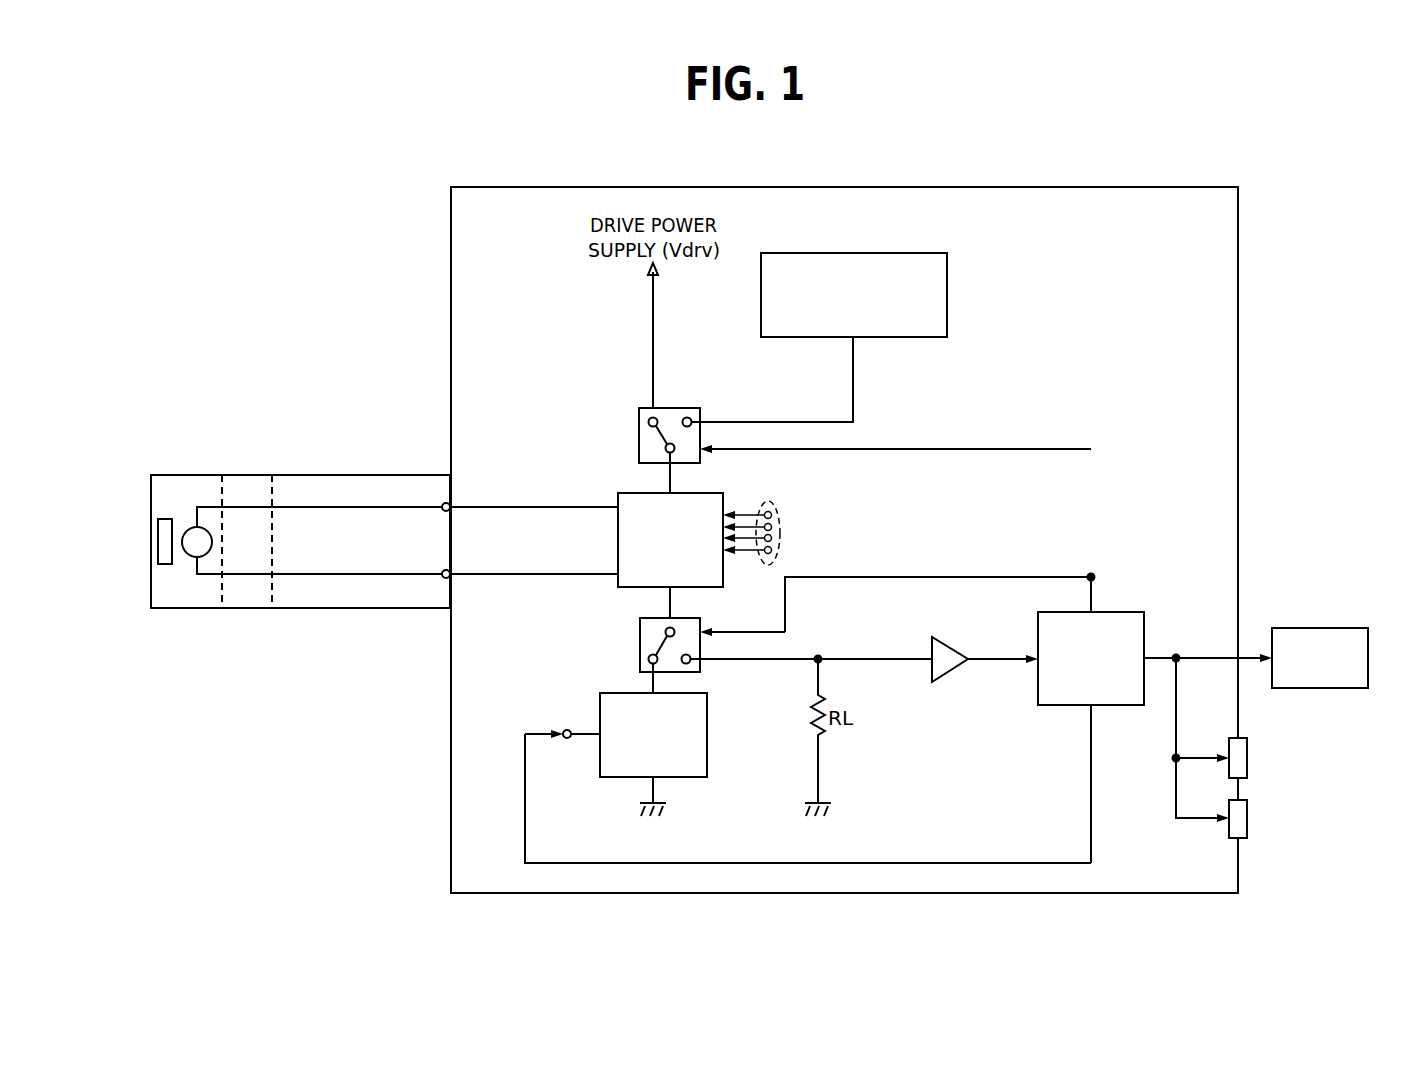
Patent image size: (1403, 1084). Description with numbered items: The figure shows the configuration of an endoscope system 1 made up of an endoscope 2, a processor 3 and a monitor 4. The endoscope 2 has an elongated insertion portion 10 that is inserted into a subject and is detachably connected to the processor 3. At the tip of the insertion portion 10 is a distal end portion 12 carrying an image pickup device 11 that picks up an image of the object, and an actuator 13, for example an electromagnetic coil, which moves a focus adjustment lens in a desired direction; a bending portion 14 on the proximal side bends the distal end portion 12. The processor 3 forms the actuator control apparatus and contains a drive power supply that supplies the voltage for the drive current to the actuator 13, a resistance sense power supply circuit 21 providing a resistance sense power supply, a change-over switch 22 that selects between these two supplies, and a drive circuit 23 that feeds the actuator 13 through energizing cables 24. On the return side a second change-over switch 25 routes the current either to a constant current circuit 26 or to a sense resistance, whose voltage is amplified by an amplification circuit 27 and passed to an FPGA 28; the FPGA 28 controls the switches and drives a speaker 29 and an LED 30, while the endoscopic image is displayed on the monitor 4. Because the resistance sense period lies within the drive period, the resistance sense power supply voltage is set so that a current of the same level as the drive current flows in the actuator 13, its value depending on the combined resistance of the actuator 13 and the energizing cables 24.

The endoscope system 1 is at (1287, 157).
The endoscope 2 is at (370, 440).
The processor 3 is at (1005, 187).
The monitor 4 is at (1322, 628).
The insertion portion 10 is at (300, 569).
The image pickup device 11 is at (166, 518).
The distal end portion 12 is at (168, 475).
The actuator 13 is at (190, 558).
The bending portion 14 is at (249, 475).
The resistance sense power supply circuit 21 is at (855, 253).
The change-over switch 22 is at (700, 412).
The drive circuit 23 is at (723, 494).
The energizing cables 24 is at (507, 507).
The change-over switch 25 is at (700, 620).
The constant current circuit 26 is at (707, 710).
The amplification circuit 27 is at (950, 638).
The FPGA 28 is at (1144, 612).
The speaker 29 is at (1247, 748).
The LED 30 is at (1247, 812).